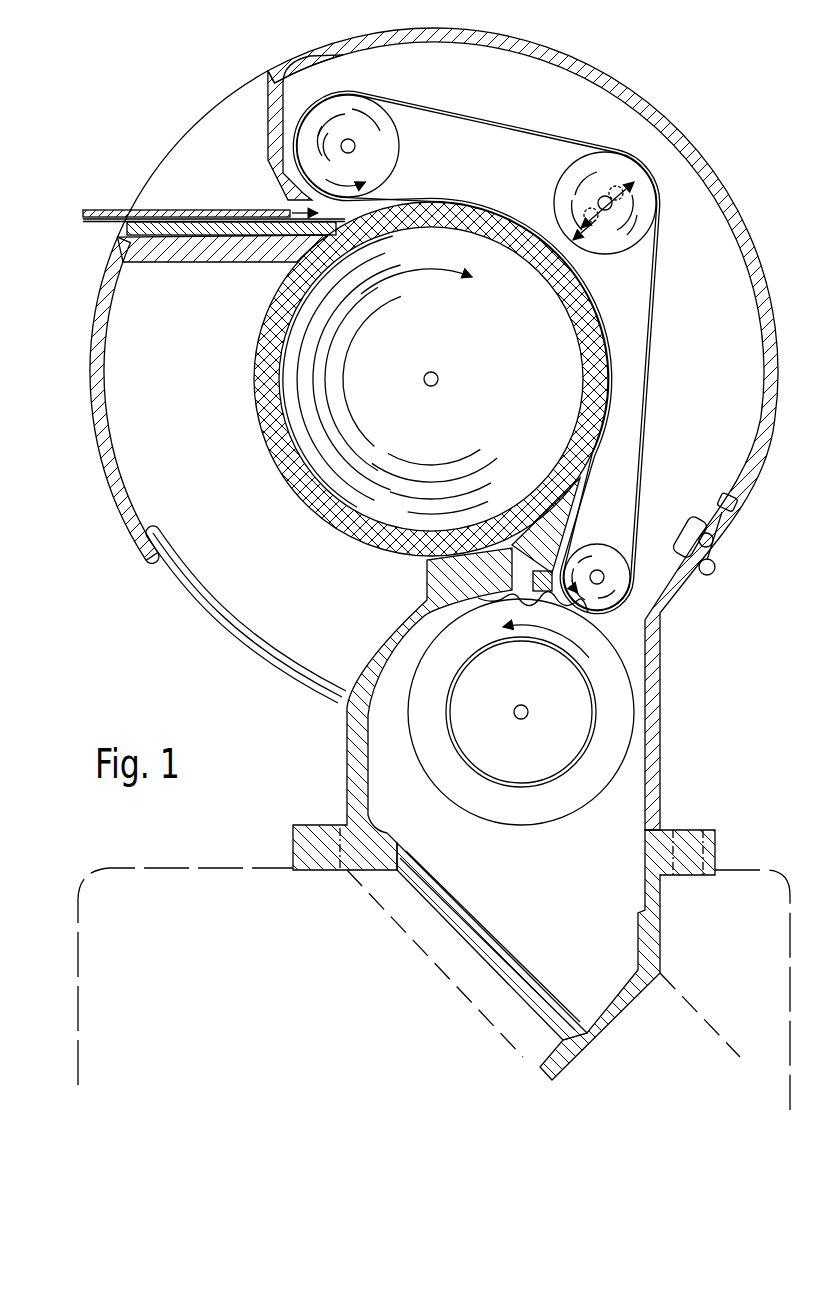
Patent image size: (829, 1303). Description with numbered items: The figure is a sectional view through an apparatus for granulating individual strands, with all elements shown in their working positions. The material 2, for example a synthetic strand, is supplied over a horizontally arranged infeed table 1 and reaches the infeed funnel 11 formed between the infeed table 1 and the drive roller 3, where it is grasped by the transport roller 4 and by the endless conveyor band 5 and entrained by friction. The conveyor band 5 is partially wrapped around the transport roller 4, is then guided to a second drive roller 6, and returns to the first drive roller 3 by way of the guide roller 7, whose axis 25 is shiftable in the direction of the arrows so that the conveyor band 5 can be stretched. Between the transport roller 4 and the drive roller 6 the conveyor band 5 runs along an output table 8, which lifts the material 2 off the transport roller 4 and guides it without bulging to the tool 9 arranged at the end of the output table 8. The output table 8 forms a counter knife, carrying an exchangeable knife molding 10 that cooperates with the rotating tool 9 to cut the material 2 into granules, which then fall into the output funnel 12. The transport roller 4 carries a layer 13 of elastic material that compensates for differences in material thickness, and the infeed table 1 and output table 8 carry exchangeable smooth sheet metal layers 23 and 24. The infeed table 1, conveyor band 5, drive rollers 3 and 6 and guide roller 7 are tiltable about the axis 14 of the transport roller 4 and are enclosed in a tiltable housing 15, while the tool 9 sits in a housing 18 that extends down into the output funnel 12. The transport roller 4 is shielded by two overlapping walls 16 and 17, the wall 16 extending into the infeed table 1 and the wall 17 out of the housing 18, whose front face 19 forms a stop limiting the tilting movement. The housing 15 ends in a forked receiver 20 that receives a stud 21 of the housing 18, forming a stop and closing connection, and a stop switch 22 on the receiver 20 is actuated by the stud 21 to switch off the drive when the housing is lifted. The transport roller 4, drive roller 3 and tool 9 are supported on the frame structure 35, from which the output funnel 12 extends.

The infeed table 1 is at (132, 227).
The material 2 is at (118, 207).
The drive roller 3 is at (313, 133).
The transport roller 4 is at (293, 290).
The conveyor band 5 is at (540, 130).
The drive roller 6 is at (613, 593).
The guide roller 7 is at (648, 203).
The output table 8 is at (563, 537).
The tool 9 is at (605, 747).
The knife molding 10 is at (427, 580).
The infeed funnel 11 is at (297, 188).
The output funnel 12 is at (597, 967).
The layer of elastic material 13 is at (268, 433).
The axis 14 is at (424, 380).
The housing 15 is at (650, 117).
The wall 16 is at (115, 493).
The wall 17 is at (222, 634).
The housing 18 is at (347, 760).
The front face 19 is at (147, 566).
The forked receiver 20 is at (710, 562).
The stud 21 is at (709, 570).
The stop switch 22 is at (712, 530).
The exchangeable layer 23 is at (187, 219).
The exchangeable layer 24 is at (735, 500).
The axis 25 is at (605, 197).
The frame structure 35 is at (152, 878).